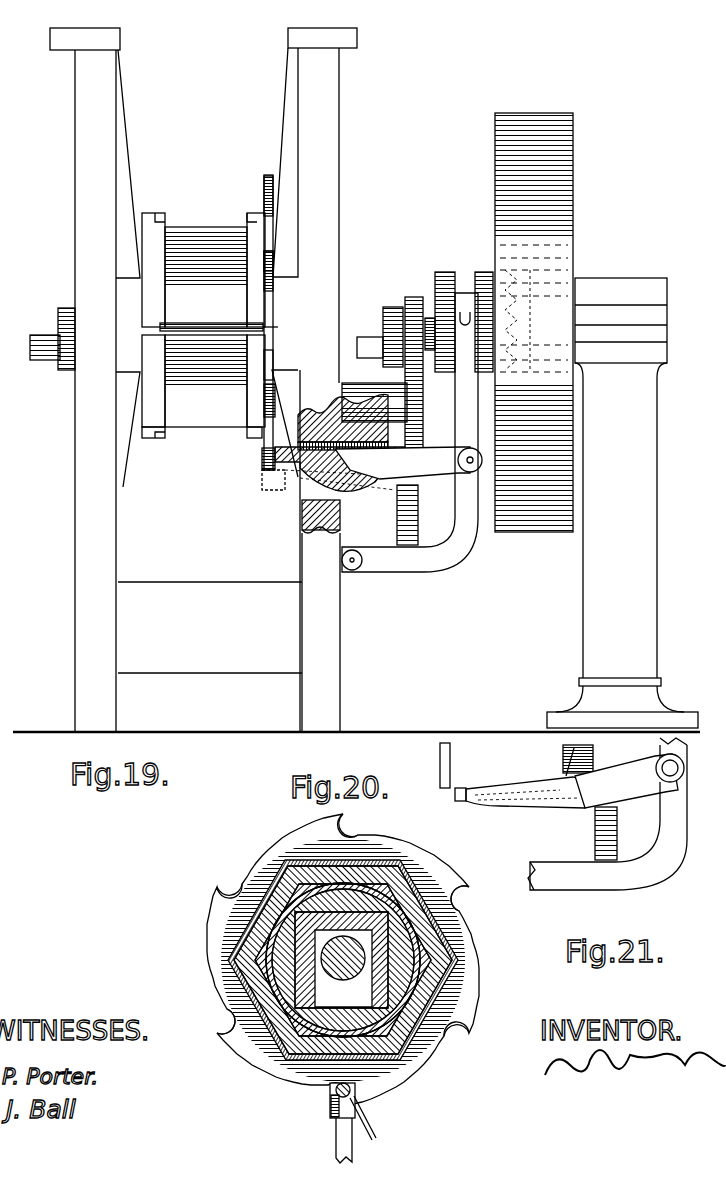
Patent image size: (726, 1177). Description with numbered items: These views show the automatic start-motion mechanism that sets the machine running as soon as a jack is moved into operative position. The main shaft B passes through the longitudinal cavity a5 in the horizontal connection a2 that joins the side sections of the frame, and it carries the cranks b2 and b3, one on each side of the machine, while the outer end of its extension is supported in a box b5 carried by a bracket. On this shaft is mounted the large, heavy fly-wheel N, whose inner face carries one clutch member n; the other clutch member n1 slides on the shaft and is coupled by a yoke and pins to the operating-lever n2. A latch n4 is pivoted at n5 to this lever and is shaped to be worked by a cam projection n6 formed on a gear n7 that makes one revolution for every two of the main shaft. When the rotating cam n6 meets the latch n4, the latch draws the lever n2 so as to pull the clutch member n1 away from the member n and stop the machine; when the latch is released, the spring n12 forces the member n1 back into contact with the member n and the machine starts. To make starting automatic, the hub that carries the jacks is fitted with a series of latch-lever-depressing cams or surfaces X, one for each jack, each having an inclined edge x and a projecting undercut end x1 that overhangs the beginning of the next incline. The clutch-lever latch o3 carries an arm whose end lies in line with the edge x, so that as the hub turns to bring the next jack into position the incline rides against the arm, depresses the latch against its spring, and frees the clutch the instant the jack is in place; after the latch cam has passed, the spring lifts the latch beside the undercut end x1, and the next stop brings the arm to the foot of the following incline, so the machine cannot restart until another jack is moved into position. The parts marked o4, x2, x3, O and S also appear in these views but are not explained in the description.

In FIG. 19, the crank b2 is at (40, 337).
In FIG. 19, the latch-lever-depressing cam X is at (264, 192).
In FIG. 21, the latch-lever-depressing cam X is at (455, 765).
In FIG. 20, the latch-lever-depressing cam X is at (455, 878).
In FIG. 19, the horizontal connection a2 is at (279, 264).
In FIG. 19, the projecting undercut end x1 is at (268, 254).
In FIG. 20, the projecting undercut end x1 is at (352, 832).
In FIG. 19, the inclined edge x is at (268, 360).
In FIG. 20, the inclined edge x is at (426, 851).
In FIG. 19, the clutch-lever latch o3 is at (190, 326).
In FIG. 19, the drum foot flange o4 is at (156, 438).
In FIG. 19, the stud gear x3 is at (262, 459).
In FIG. 21, the stud gear x3 is at (454, 800).
In FIG. 20, the stud gear x3 is at (330, 1098).
In FIG. 19, the lever x2 is at (306, 458).
In FIG. 21, the lever x2 is at (520, 784).
In FIG. 20, the lever x2 is at (356, 1090).
In FIG. 19, the latch n4 is at (402, 467).
In FIG. 21, the latch n4 is at (626, 781).
In FIG. 19, the latch pivot n5 is at (470, 473).
In FIG. 19, the cam projection n6 is at (410, 452).
In FIG. 21, the cam projection n6 is at (595, 812).
In FIG. 19, the operating-lever n2 is at (410, 432).
In FIG. 19, the spring n12 is at (430, 318).
In FIG. 19, the crank b3 is at (364, 336).
In FIG. 19, the fly-wheel N is at (534, 322).
In FIG. 19, the box b5 is at (621, 320).
In FIG. 21, the gear n7 is at (594, 751).
In FIG. 21, the clutch member n is at (566, 778).
In FIG. 21, the sliding clutch member n1 is at (607, 814).
In FIG. 20, the sliding clutch member n1 is at (352, 1142).
In FIG. 20, the longitudinal cavity a5 is at (460, 924).
In FIG. 20, the ring O is at (265, 986).
In FIG. 20, the square block S is at (404, 1028).
In FIG. 20, the shaft B is at (340, 980).